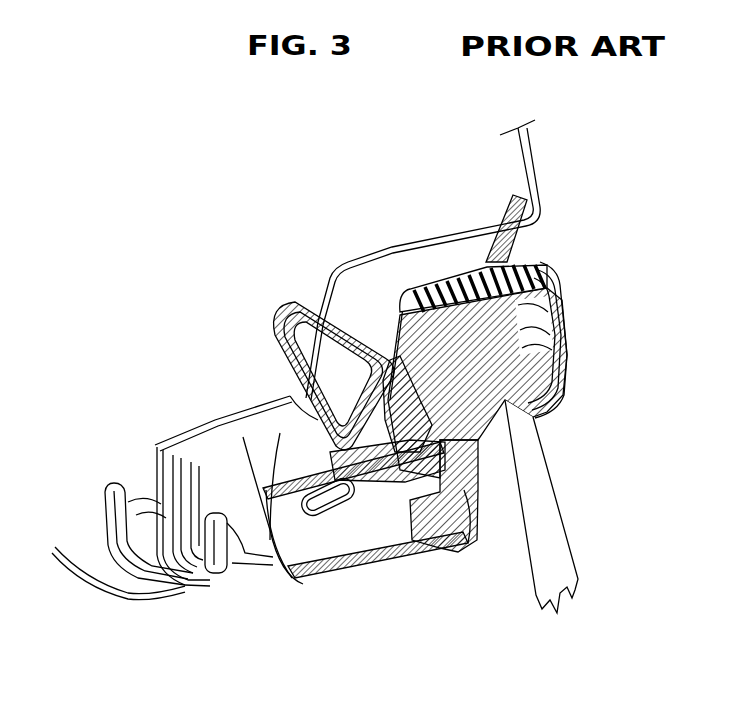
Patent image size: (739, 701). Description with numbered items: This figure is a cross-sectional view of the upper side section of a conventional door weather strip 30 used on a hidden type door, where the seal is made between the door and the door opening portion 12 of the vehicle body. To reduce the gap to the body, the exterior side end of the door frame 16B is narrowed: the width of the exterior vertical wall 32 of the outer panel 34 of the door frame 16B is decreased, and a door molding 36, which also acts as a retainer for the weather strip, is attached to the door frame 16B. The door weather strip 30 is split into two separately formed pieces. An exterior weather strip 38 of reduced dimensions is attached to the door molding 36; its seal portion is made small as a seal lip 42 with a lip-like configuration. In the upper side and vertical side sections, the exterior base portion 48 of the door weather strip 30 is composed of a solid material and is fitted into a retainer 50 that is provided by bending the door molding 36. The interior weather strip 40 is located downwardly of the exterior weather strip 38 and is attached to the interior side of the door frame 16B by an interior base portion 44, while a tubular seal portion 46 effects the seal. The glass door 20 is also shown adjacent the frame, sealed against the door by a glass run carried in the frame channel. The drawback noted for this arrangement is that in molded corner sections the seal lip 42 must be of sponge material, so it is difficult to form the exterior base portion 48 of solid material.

The door opening portion 12 is at (348, 256).
The door frame 16B is at (400, 567).
The glass door 20 is at (557, 498).
The door weather strip 30 is at (268, 326).
The exterior vertical wall 32 is at (570, 344).
The outer panel 34 is at (417, 352).
The door molding 36 is at (563, 320).
The exterior weather strip 38 is at (465, 272).
The interior weather strip 40 is at (292, 393).
The seal lip 42 is at (507, 200).
The interior base portion 44 is at (360, 477).
The tubular seal portion 46 is at (298, 362).
The exterior base portion 48 is at (455, 308).
The retainer 50 is at (556, 281).